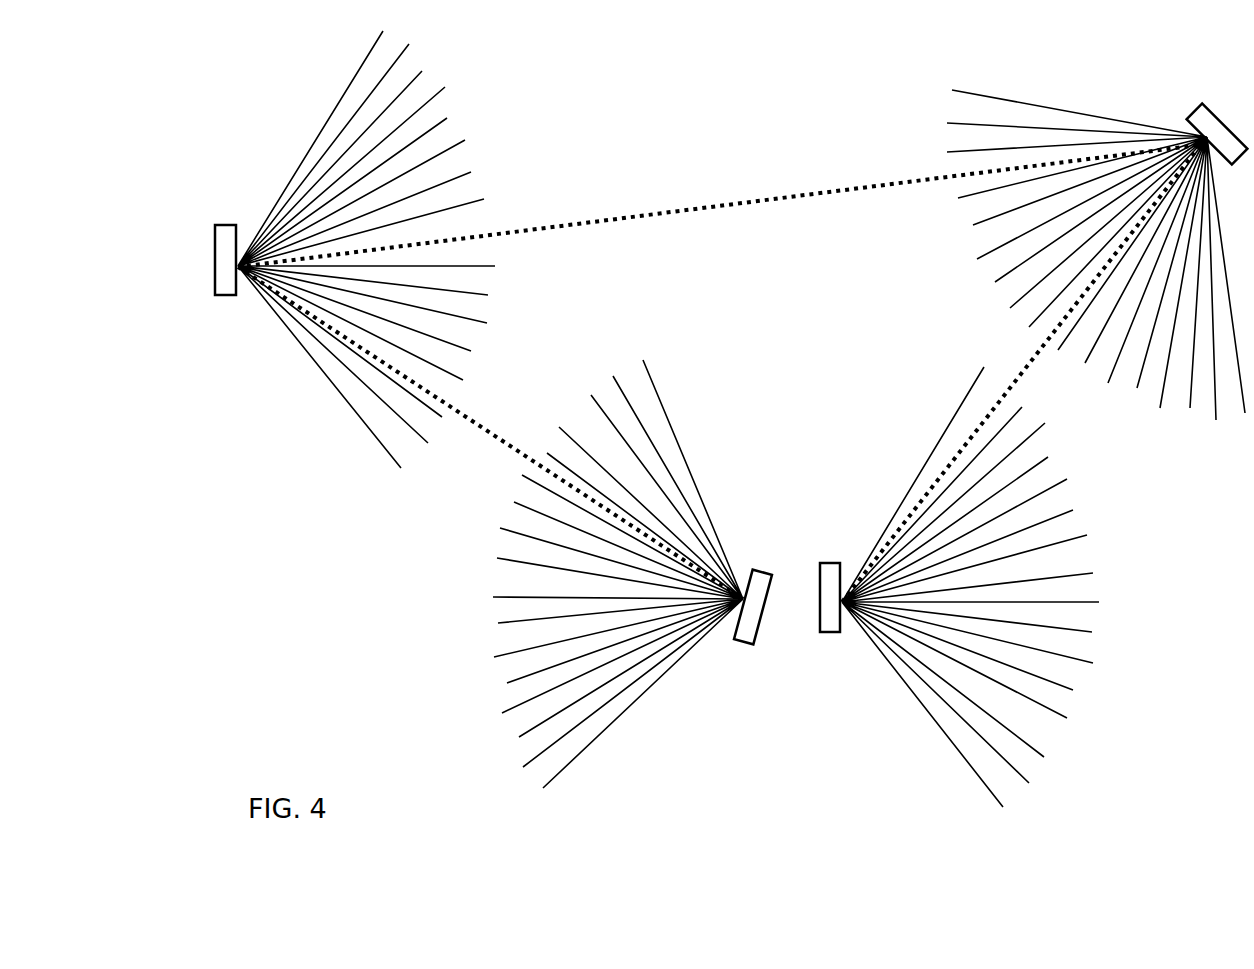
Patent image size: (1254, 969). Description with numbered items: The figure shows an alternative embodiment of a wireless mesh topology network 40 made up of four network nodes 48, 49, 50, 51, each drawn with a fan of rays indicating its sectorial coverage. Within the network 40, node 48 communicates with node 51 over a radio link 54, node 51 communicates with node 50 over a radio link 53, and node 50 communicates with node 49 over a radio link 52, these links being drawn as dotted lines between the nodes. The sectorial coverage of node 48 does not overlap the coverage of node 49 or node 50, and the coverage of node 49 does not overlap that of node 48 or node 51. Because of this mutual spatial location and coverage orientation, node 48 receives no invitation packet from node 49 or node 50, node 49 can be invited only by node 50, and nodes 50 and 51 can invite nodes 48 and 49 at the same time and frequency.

The wireless mesh topology network 40 is at (785, 395).
The network node 48 is at (823, 636).
The network node 49 is at (766, 572).
The network node 50 is at (217, 298).
The network node 51 is at (1202, 100).
The radio link 52 is at (496, 434).
The radio link 53 is at (612, 221).
The radio link 54 is at (1010, 380).